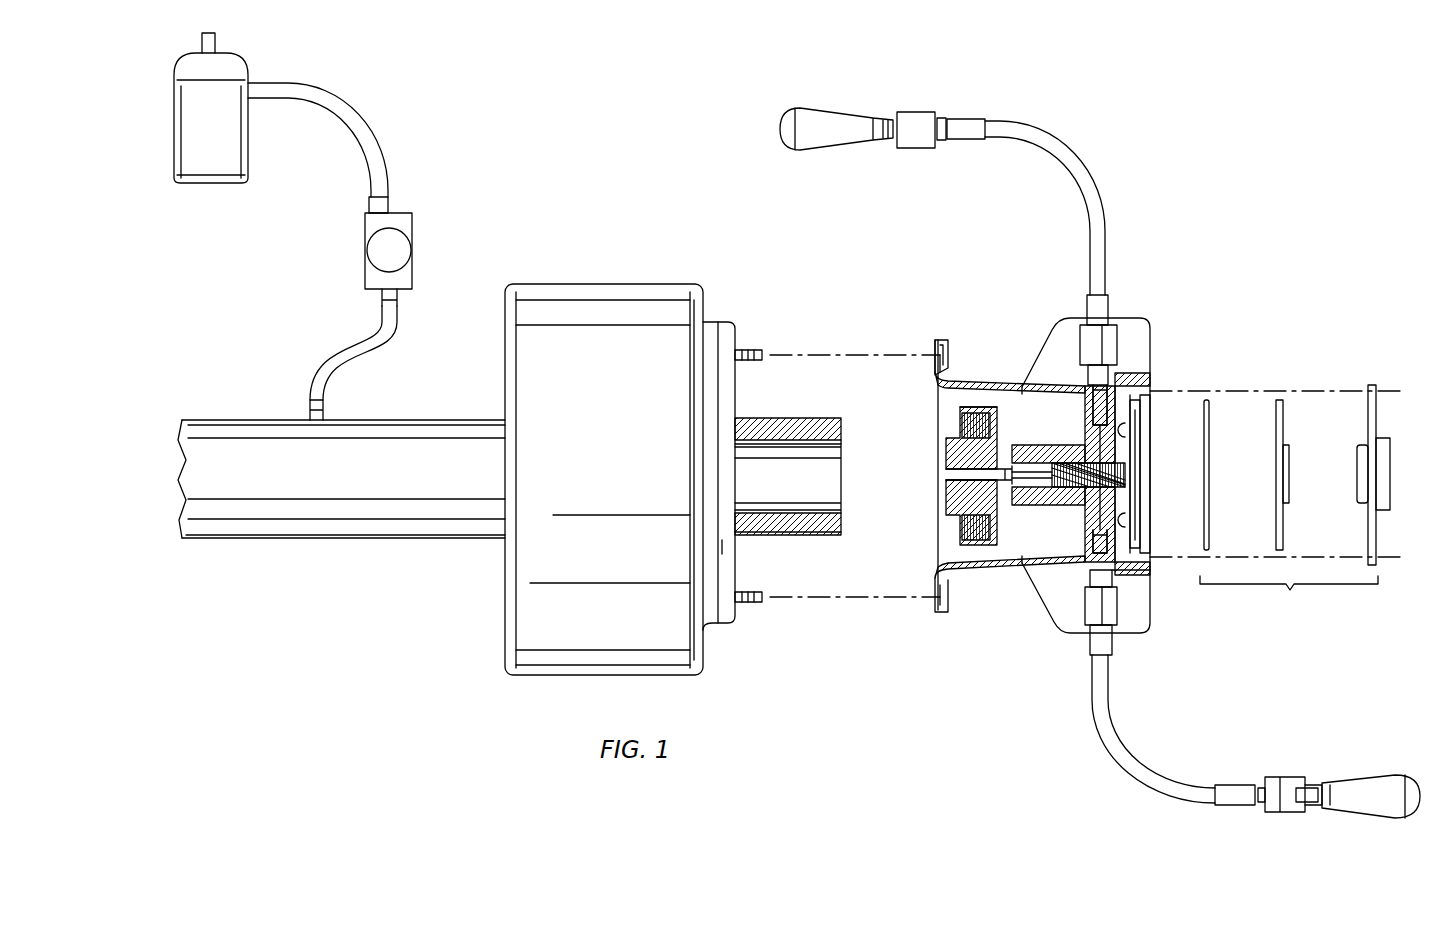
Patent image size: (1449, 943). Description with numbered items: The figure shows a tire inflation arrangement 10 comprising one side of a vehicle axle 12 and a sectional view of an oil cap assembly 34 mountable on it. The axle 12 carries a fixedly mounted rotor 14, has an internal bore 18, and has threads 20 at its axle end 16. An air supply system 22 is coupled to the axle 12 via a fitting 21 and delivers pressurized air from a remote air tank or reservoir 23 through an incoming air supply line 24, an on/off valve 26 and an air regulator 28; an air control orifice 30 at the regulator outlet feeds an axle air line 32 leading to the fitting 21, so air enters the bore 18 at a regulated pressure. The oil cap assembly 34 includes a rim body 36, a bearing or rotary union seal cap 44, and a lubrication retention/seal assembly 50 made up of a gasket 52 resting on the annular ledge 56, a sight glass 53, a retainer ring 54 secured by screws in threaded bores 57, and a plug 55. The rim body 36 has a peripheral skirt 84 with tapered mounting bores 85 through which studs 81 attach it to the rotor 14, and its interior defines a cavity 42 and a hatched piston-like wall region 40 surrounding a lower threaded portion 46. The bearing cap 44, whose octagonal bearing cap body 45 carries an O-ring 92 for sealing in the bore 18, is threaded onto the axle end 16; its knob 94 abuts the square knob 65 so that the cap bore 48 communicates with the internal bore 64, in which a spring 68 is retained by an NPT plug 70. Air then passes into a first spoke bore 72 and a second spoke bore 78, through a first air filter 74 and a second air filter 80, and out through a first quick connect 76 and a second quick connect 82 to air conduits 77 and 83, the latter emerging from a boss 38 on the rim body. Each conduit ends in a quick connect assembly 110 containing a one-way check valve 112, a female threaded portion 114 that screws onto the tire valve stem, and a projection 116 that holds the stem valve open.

The brake system 10 is at (1240, 120).
The vehicle axle 12 is at (380, 483).
The rotor 14 is at (618, 450).
The axle end 16 is at (793, 418).
The internal bore 18 is at (838, 508).
The threads 20 is at (826, 540).
The fitting 21 is at (308, 409).
The air supply system 22 is at (240, 250).
The air tank or reservoir 23 is at (248, 140).
The incoming air supply line 24 is at (344, 108).
The on/off valve 26 is at (369, 206).
The air regulator 28 is at (412, 228).
The air control orifice 30 is at (397, 297).
The axle air line 32 is at (346, 350).
The oil cap assembly 34 is at (1165, 296).
The rim body 36 is at (972, 378).
The housing boss 38 is at (1058, 328).
The piston body 40 is at (1040, 506).
The cavity 42 is at (1015, 394).
The bearing or rotary union seal cap 44 is at (940, 444).
The bearing cap body 45 is at (946, 500).
The threaded portion 46 is at (958, 533).
The bore of bearing cap 48 is at (946, 475).
The lubrication retention/seal assembly 50 is at (1296, 503).
The gasket 52 is at (1210, 424).
The sight glass 53 is at (1288, 430).
The retainer ring 54 is at (1380, 422).
The plug 55 is at (1390, 504).
The annular surface or ledge 56 is at (1137, 540).
The threaded bores 57 is at (1140, 572).
The internal bore 64 is at (1036, 463).
The square knob 65 is at (1010, 506).
The spring 68 is at (1076, 490).
The NPT plug 70 is at (1137, 440).
The first spoke bore 72 is at (1085, 422).
The first air filter 74 is at (1123, 432).
The first quick connect 76 is at (1115, 334).
The air conduit 77 is at (1072, 152).
The second spoke bore 78 is at (1130, 482).
The second air filter 80 is at (1130, 522).
The studs 81 is at (755, 350).
The second quick connect 82 is at (1118, 622).
The air conduit 83 is at (1106, 756).
The peripheral skirt 84 is at (940, 340).
The mounting bores 85 is at (935, 352).
The O-ring 92 is at (950, 430).
The knob 94 is at (1000, 462).
The quick connect assembly 110 is at (905, 92).
The one-way check valve 112 is at (1283, 778).
The female threaded portion 114 is at (1305, 812).
The projection 116 is at (1312, 790).